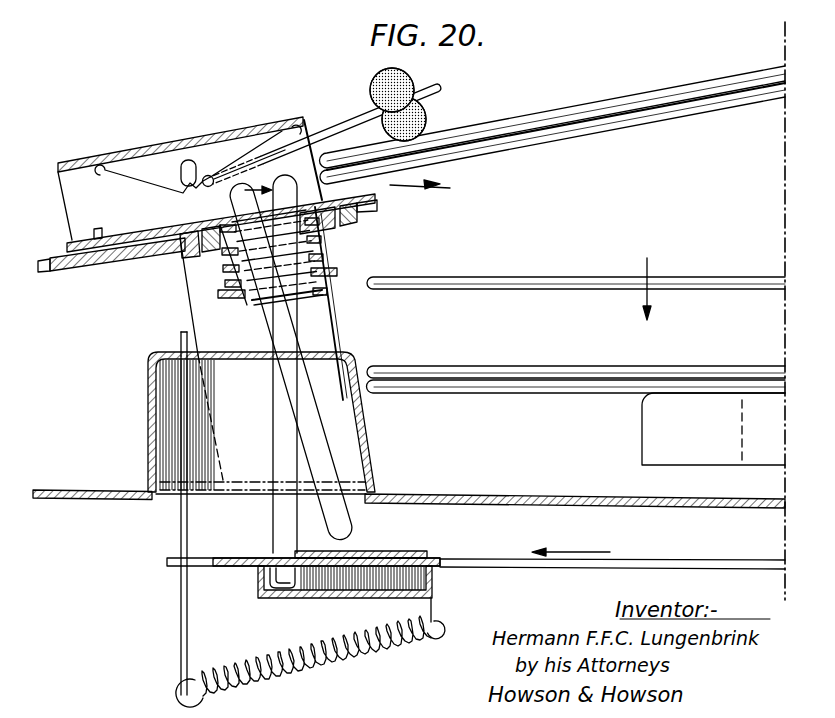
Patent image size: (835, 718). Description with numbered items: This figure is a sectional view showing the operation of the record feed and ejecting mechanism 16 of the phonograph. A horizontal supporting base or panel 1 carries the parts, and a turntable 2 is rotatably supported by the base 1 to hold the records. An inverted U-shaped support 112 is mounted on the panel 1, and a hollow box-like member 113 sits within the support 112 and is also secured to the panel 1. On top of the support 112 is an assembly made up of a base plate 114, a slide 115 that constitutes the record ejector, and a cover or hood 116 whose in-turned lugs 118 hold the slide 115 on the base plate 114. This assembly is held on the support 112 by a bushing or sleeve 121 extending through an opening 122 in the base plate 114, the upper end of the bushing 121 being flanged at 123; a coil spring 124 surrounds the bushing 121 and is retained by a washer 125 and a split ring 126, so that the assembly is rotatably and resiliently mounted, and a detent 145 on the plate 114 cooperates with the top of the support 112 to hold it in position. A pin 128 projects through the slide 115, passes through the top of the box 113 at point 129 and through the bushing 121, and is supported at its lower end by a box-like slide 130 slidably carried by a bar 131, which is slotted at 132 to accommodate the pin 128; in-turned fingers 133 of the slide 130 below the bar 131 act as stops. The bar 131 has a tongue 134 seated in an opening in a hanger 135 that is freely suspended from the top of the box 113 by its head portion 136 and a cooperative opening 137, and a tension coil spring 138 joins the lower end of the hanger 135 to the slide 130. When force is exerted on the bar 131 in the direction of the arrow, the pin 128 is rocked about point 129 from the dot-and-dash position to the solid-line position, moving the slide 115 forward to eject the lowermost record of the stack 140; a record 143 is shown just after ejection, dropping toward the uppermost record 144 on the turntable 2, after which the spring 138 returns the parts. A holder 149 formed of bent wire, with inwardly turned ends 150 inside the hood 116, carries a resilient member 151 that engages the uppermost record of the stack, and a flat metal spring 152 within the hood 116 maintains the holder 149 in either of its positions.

The supporting base or panel 1 is at (527, 494).
The turntable 2 is at (656, 441).
The feed mechanism 16 is at (127, 123).
The inverted U-shaped support 112 is at (332, 323).
The hollow box-like member 113 is at (148, 398).
The base plate 114 is at (62, 271).
The slide 115 is at (435, 189).
The cover or hood 116 is at (240, 130).
The in-turned lugs 118 is at (85, 233).
The bushing or sleeve 121 is at (322, 292).
The opening 122 is at (217, 230).
The flange 123 is at (377, 201).
The coil spring 124 is at (330, 258).
The washer 125 is at (225, 295).
The split ring 126 is at (240, 300).
The pin 128 is at (285, 344).
The point 129 is at (302, 367).
The box-like slide 130 is at (342, 597).
The bar 131 is at (668, 566).
The slot 132 is at (350, 557).
The in-turned fingers 133 is at (264, 577).
The tongue 134 is at (170, 561).
The hanger 135 is at (180, 520).
The head portion 136 is at (181, 333).
The cooperative opening 137 is at (222, 362).
The coil spring 138 is at (345, 668).
The stack 140 is at (600, 133).
The record 143 is at (573, 283).
The uppermost record 144 is at (585, 372).
The detent 145 is at (190, 255).
The holder 149 is at (442, 87).
The ends 150 is at (207, 172).
The resilient member 151 is at (372, 86).
The flat metal spring 152 is at (147, 180).